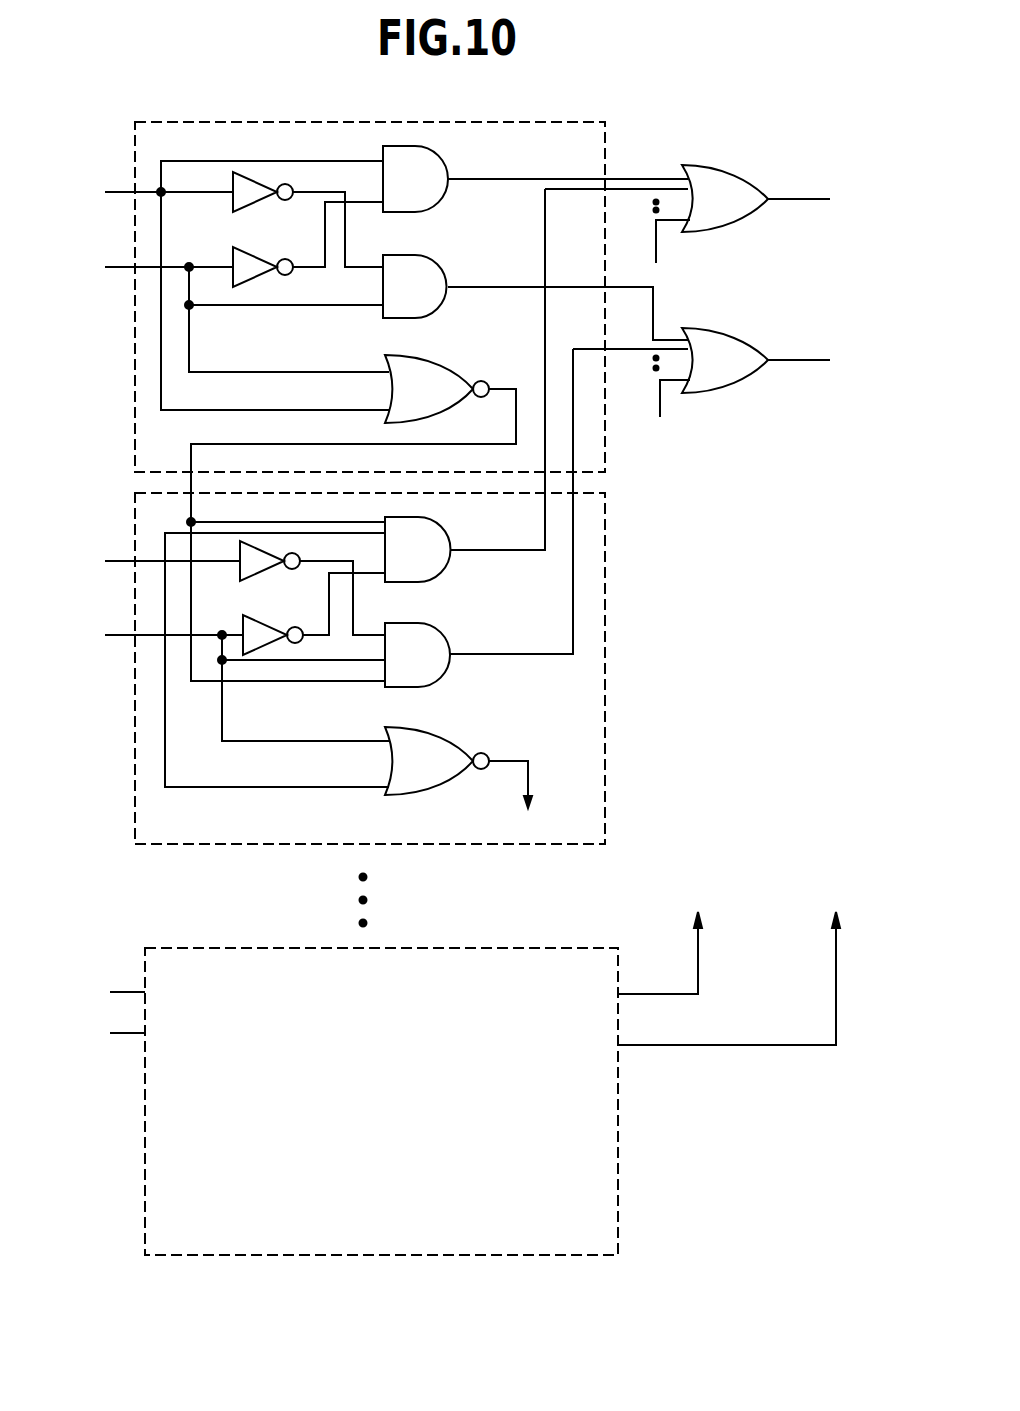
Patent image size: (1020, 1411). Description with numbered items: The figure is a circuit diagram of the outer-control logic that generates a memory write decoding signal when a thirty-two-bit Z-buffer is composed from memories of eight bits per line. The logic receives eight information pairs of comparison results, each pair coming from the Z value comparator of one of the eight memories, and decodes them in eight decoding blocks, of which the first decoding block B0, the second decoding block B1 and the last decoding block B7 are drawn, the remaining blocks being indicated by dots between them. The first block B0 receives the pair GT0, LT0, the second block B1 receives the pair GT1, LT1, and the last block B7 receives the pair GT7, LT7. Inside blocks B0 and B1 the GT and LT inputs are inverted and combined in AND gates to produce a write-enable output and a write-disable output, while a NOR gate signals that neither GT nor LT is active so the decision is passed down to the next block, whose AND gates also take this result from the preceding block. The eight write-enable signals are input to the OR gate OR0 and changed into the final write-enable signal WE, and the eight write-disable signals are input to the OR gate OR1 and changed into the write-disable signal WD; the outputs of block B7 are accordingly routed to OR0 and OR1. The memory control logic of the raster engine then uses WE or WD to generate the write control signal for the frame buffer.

The decoding block B0 is at (370, 401).
The decoding block B1 is at (370, 668).
The decoding block B7 is at (514, 1072).
The OR gate OR0 is at (608, 342).
The OR gate OR1 is at (608, 470).
The greater-than comparison result GT0 is at (149, 192).
The less-than comparison result LT0 is at (149, 267).
The greater-than comparison result GT1 is at (152, 561).
The less-than comparison result LT1 is at (154, 635).
The greater-than comparison result GT7 is at (106, 986).
The less-than comparison result LT7 is at (106, 1032).
The write-enable signal WE is at (821, 200).
The write-disable signal WD is at (822, 360).